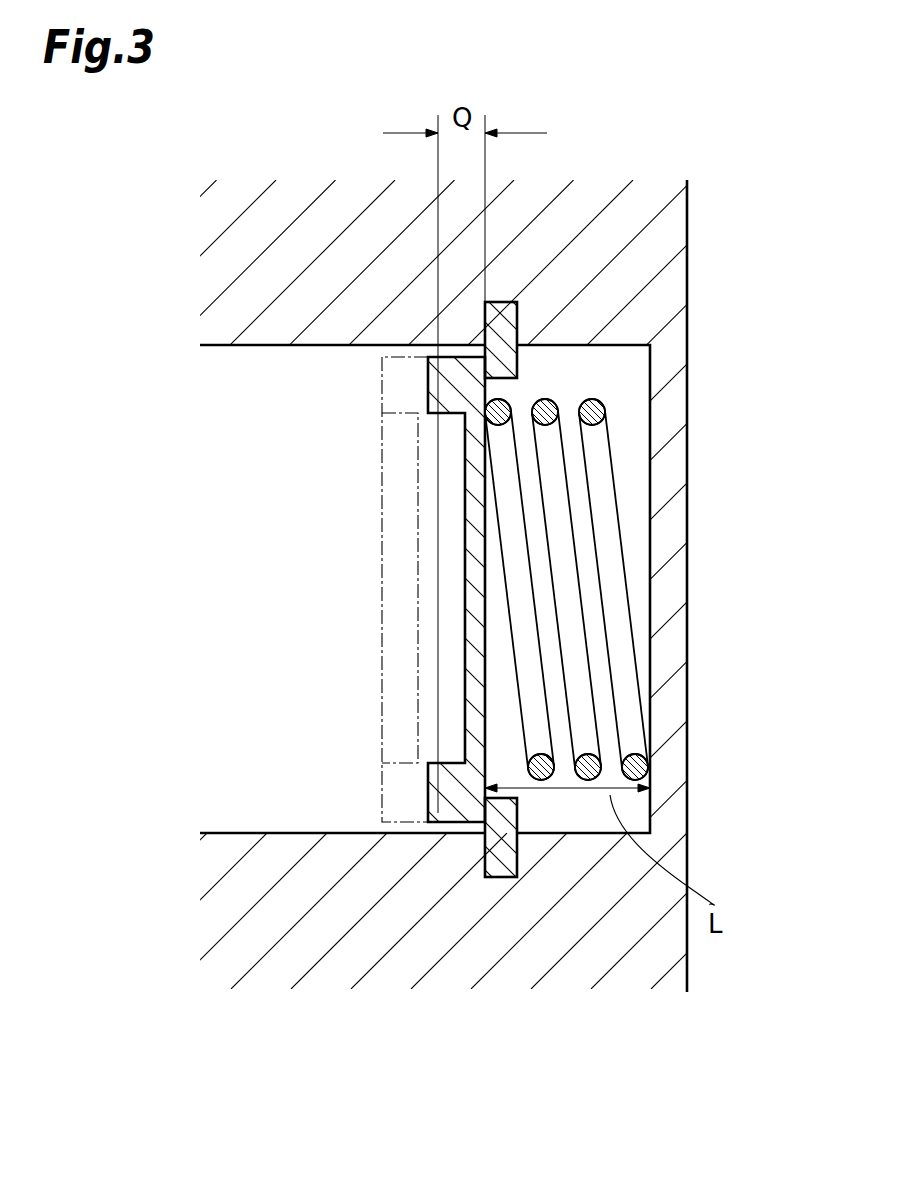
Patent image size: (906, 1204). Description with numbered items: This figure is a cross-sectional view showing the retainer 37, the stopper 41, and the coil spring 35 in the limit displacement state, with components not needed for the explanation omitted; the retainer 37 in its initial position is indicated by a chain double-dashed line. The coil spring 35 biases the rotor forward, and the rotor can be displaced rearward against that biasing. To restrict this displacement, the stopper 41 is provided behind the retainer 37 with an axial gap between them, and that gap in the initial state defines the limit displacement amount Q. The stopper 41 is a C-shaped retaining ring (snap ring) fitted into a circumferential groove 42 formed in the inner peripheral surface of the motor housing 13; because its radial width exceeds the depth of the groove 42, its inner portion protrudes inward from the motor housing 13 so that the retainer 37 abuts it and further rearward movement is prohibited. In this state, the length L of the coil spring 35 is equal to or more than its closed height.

The motor housing 13 is at (245, 945).
The coil spring 35 is at (605, 485).
The retainer 37 is at (402, 822).
The stopper 41 is at (510, 812).
The groove 42 is at (505, 318).